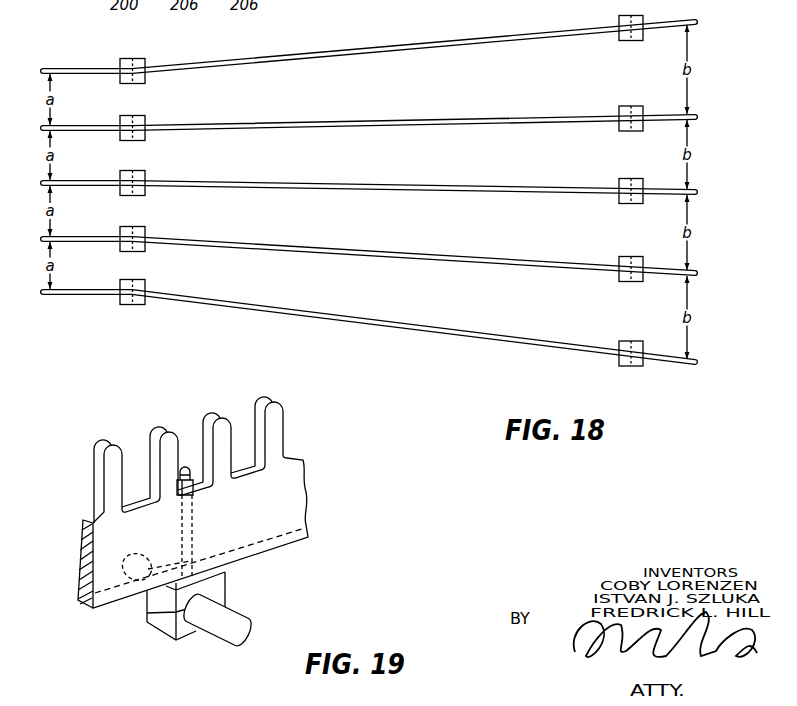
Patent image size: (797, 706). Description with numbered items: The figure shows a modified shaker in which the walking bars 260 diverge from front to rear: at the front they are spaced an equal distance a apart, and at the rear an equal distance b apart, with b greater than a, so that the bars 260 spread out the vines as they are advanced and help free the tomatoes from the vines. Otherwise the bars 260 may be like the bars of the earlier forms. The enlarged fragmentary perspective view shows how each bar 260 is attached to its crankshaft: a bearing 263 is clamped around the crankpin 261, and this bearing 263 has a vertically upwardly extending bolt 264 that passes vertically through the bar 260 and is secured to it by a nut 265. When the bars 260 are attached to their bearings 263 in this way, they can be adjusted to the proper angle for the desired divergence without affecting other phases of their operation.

In FIG. 18, the bar 260 is at (461, 46).
In FIG. 19, the bar 260 is at (308, 497).
In FIG. 19, the crankpin 261 is at (250, 632).
In FIG. 19, the bearing 263 is at (225, 585).
In FIG. 19, the bolt 264 is at (190, 532).
In FIG. 19, the nut 265 is at (195, 495).